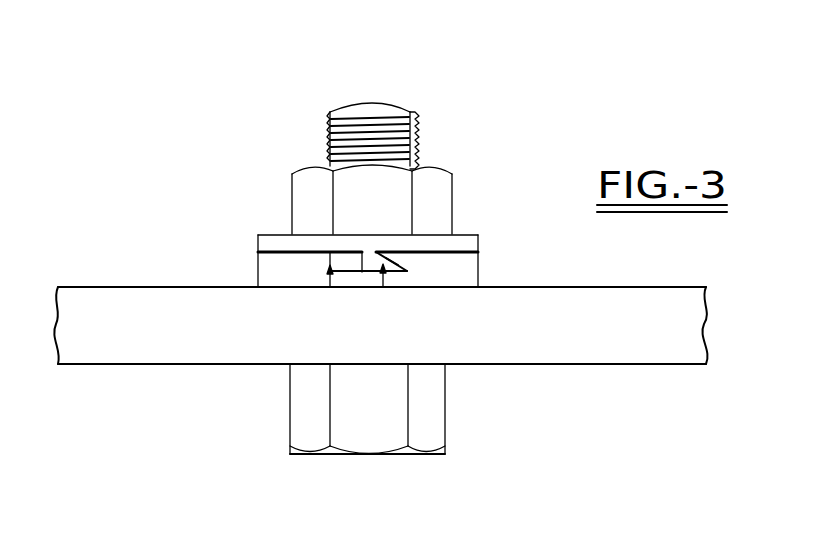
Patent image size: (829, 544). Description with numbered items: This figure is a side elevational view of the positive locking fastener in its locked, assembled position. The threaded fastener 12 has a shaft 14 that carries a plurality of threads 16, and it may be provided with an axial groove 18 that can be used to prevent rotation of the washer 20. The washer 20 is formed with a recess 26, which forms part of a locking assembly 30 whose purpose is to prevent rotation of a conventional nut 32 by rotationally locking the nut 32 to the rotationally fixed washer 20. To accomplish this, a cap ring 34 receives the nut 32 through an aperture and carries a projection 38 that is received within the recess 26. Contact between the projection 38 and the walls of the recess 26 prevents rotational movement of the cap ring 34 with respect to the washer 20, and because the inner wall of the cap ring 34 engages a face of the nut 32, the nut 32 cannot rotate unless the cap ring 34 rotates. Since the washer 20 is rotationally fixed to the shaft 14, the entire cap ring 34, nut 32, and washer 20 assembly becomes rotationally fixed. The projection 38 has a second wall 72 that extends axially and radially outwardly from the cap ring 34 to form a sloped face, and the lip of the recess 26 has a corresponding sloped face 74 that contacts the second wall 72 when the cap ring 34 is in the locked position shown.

The threaded fastener 12 is at (297, 410).
The shaft 14 is at (375, 104).
The threads 16 is at (333, 128).
The axial groove 18 is at (412, 110).
The washer 20 is at (258, 268).
The recess 26 is at (330, 288).
The locking assembly 30 is at (390, 266).
The nut 32 is at (298, 168).
The cap ring 34 is at (258, 240).
The projection 38 is at (383, 288).
The second wall 72 is at (386, 250).
The sloped face 74 is at (393, 263).